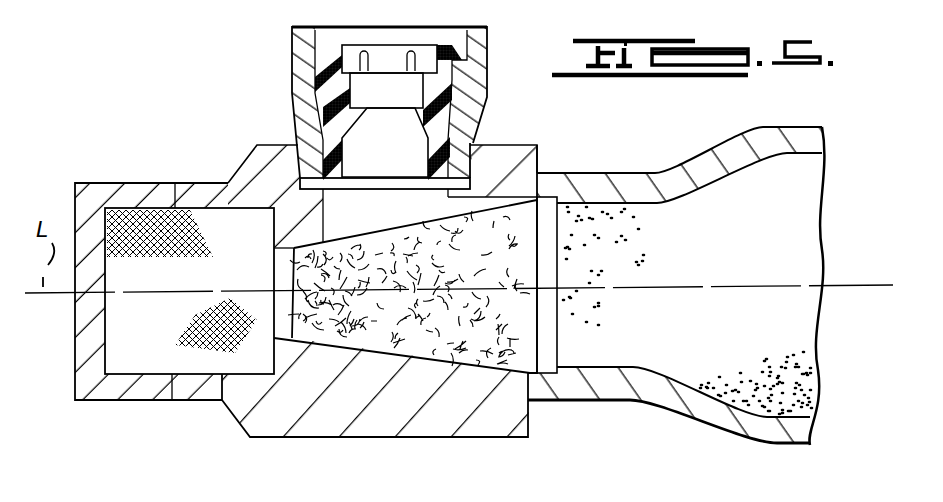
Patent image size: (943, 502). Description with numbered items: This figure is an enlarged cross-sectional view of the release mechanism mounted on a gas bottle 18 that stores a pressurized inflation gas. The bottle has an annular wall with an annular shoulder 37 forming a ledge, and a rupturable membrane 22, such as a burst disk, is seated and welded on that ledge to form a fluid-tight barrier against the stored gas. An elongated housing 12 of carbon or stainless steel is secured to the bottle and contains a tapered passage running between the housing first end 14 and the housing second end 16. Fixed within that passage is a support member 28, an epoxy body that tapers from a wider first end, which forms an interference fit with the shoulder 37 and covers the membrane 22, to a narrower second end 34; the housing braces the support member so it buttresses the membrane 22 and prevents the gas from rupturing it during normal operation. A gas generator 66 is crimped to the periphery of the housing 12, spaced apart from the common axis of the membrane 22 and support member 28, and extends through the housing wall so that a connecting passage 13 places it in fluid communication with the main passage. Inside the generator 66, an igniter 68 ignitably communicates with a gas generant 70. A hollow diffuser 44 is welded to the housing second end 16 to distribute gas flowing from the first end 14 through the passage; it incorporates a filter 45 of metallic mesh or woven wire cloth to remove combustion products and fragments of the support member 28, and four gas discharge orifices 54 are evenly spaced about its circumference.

The housing 12 is at (248, 159).
The connecting passage 13 is at (437, 200).
The housing first end 14 is at (517, 432).
The housing second end 16 is at (233, 402).
The gas bottle 18 is at (669, 163).
The rupturable membrane 22 is at (553, 322).
The support member 28 is at (352, 327).
The support member second end 34 is at (238, 402).
The annular shoulder 37 is at (500, 207).
The hollow diffuser 44 is at (78, 403).
The filter 45 is at (123, 207).
The gas discharge orifices 54 is at (190, 190).
The gas generator 66 is at (291, 46).
The igniter 68 is at (377, 97).
The gas generant 70 is at (393, 170).